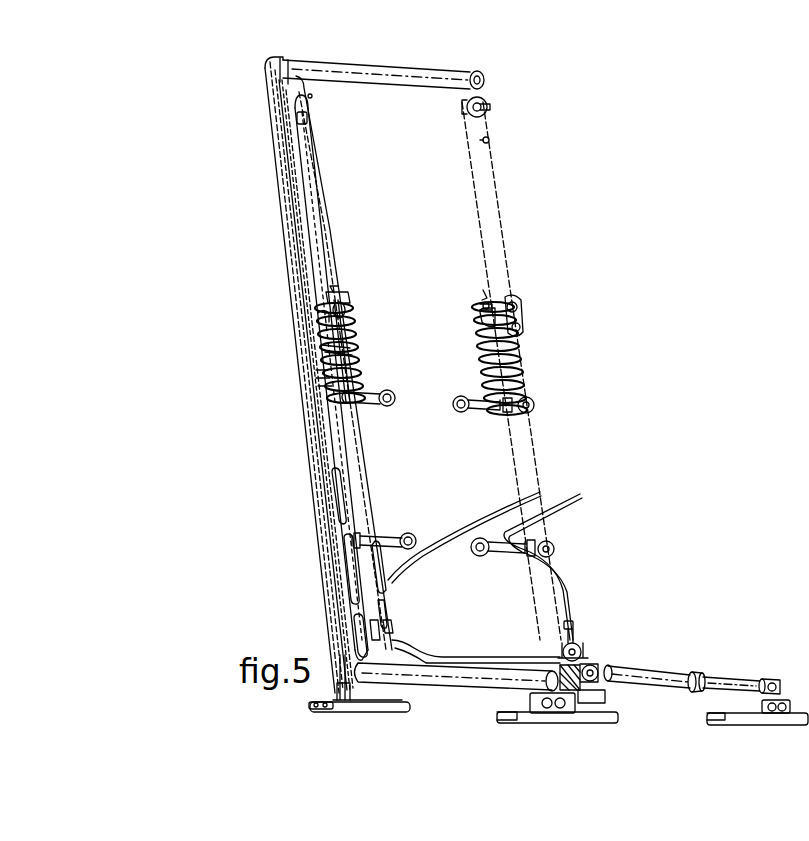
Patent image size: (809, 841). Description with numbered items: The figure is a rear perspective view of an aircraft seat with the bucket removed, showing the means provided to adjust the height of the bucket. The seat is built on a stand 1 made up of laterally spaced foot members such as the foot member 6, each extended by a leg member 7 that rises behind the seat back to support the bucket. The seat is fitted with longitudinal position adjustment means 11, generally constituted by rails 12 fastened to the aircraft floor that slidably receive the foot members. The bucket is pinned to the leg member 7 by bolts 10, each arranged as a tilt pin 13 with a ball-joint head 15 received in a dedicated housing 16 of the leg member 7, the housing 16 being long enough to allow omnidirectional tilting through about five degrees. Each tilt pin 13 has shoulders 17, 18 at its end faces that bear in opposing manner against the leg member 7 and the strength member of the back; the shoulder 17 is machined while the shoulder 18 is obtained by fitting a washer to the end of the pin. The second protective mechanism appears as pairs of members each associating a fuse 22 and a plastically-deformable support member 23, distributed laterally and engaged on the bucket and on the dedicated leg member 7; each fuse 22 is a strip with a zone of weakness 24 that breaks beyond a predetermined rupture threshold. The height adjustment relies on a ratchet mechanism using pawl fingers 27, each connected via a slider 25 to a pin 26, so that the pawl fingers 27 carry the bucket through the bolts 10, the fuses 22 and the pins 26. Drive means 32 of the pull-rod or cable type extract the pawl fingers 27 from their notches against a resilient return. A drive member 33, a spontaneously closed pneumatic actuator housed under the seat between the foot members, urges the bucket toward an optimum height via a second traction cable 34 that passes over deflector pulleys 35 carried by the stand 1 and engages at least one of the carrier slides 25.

The stand 1 is at (295, 447).
The foot member 6 is at (493, 656).
The leg member 7 is at (332, 568).
The bolt 10 is at (371, 420).
The longitudinal position adjustment means 11 is at (382, 717).
The rail 12 is at (353, 713).
The tilt pin 13 is at (376, 404).
The ball-joint head 15 is at (520, 412).
The housing 16 is at (348, 472).
The shoulder 17 is at (532, 402).
The shoulder 18 is at (394, 396).
The fuse 22 is at (330, 376).
The plastically-deformable support member 23 is at (355, 370).
The zone of weakness 24 is at (348, 346).
The slider 25 is at (326, 296).
The pin 26 is at (326, 318).
The pawl finger 27 is at (336, 296).
The drive means for the pawl fingers 32 is at (348, 302).
The drive member 33 is at (676, 672).
The second traction cable 34 is at (496, 200).
The deflector pulley 35 is at (490, 110).